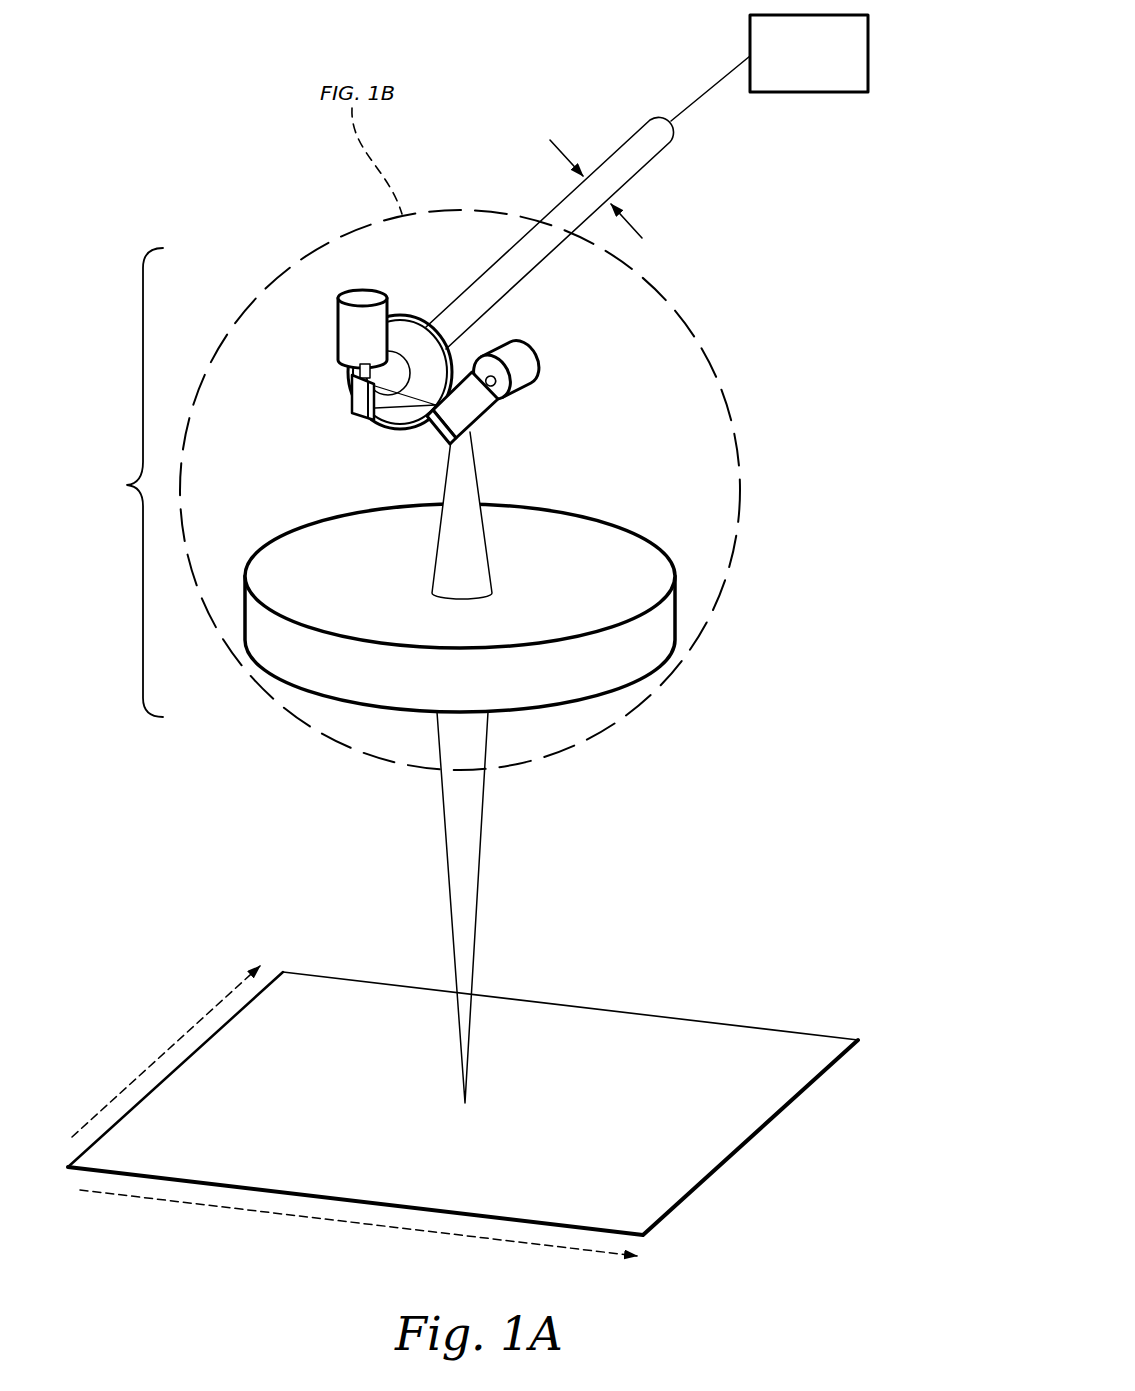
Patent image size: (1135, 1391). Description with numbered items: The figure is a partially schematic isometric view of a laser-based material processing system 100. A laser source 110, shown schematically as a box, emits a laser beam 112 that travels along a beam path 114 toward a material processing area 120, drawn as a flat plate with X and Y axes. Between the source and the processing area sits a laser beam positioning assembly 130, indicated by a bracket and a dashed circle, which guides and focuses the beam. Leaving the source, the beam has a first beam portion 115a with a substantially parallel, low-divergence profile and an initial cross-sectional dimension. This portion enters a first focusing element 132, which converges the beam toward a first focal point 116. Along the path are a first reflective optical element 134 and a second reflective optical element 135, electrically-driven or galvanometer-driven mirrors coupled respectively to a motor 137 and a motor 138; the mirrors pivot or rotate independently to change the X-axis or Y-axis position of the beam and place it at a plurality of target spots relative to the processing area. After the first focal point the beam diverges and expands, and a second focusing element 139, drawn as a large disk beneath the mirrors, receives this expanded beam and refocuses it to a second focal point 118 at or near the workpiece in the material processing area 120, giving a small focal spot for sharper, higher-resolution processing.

The laser-based material processing system 100 is at (180, 108).
The laser source 110 is at (868, 57).
The laser beam 112 is at (648, 142).
The beam path 114 is at (692, 124).
The first beam portion 115a is at (556, 200).
The first focal point 116 is at (411, 410).
The second focal point 118 is at (467, 1100).
The material processing area 120 is at (752, 1043).
The laser beam positioning assembly 130 is at (127, 486).
The first focusing element 132 is at (405, 330).
The first reflective optical element 134 is at (352, 397).
The second reflective optical element 135 is at (472, 408).
The motor 137 is at (346, 330).
The motor 138 is at (522, 356).
The second focusing element 139 is at (667, 623).